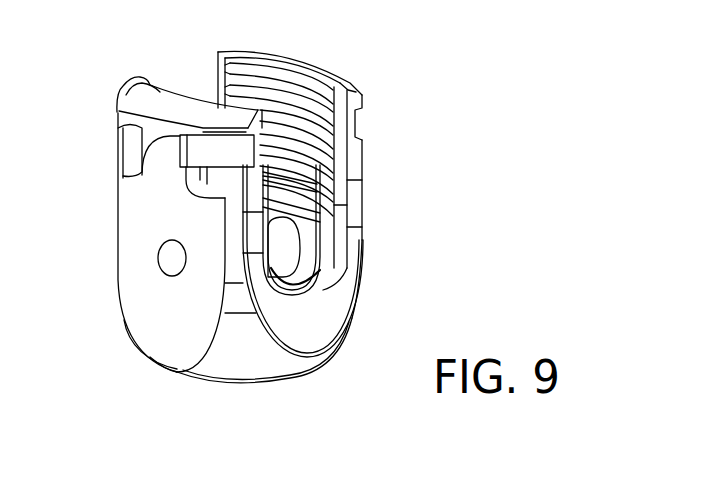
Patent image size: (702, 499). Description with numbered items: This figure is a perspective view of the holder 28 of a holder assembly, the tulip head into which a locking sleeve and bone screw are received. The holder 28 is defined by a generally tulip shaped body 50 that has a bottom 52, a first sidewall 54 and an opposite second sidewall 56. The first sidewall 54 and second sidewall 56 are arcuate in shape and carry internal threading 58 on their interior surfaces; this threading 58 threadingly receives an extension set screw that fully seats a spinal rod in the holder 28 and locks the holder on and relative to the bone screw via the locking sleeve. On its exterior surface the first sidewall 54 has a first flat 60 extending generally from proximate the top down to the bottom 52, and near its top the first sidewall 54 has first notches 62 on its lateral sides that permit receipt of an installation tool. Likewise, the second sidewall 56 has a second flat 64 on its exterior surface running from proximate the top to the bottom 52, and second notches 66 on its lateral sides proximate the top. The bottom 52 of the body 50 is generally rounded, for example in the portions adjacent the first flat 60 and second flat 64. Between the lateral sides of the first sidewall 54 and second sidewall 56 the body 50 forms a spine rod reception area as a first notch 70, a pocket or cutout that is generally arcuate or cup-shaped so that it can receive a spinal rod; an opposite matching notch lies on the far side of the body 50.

The holder 28 is at (238, 364).
The tulip shaped body 50 is at (325, 358).
The bottom 52 is at (270, 377).
The first sidewall 54 is at (137, 272).
The second sidewall 56 is at (363, 190).
The internal threading 58 is at (313, 60).
The first flat 60 is at (178, 347).
The first notches 62 is at (118, 124).
The second flat 64 is at (374, 208).
The second notches 66 is at (356, 122).
The first notch 70 is at (330, 268).